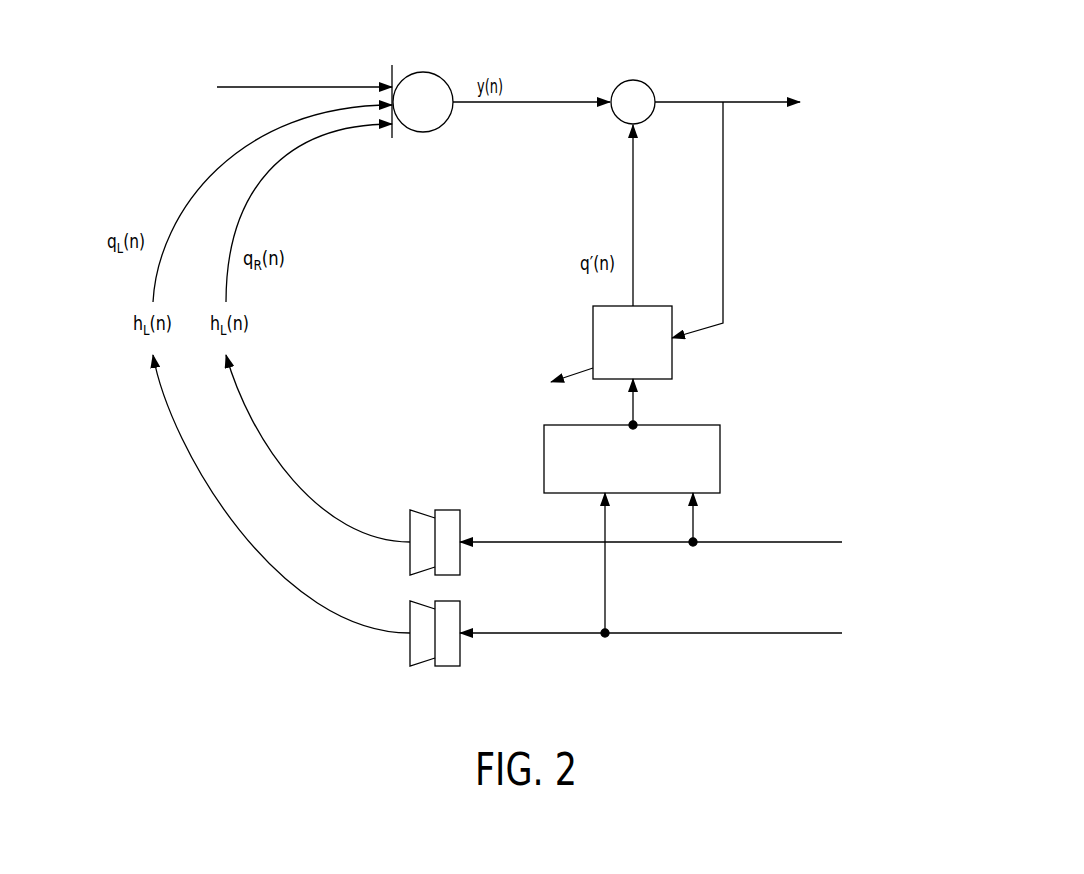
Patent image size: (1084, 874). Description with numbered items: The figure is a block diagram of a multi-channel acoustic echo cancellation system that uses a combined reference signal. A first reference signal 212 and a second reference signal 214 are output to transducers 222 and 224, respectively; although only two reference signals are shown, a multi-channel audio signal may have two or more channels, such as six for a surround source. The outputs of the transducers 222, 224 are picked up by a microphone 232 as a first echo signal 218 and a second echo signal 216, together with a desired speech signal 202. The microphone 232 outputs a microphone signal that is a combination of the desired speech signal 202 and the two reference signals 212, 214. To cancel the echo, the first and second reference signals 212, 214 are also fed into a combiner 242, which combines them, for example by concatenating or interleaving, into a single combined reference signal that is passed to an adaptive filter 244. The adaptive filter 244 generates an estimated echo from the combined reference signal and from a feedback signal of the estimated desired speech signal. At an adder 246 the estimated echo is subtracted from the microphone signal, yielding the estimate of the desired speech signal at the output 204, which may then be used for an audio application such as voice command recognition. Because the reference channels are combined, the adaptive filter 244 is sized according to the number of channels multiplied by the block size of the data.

The desired speech signal b(n) 202 is at (317, 88).
The output signal b'(n) path 204 is at (758, 104).
The first reference signal xR(n) 212 is at (768, 542).
The second reference signal xL(n) 214 is at (736, 633).
The echo signal qR(n) 216 is at (244, 420).
The echo signal qL(n) 218 is at (177, 460).
The transducer 222 is at (448, 508).
The transducer 224 is at (450, 668).
The microphone 232 is at (421, 72).
The combiner 242 is at (723, 448).
The adaptive filter 244 is at (673, 365).
The adder 246 is at (636, 78).